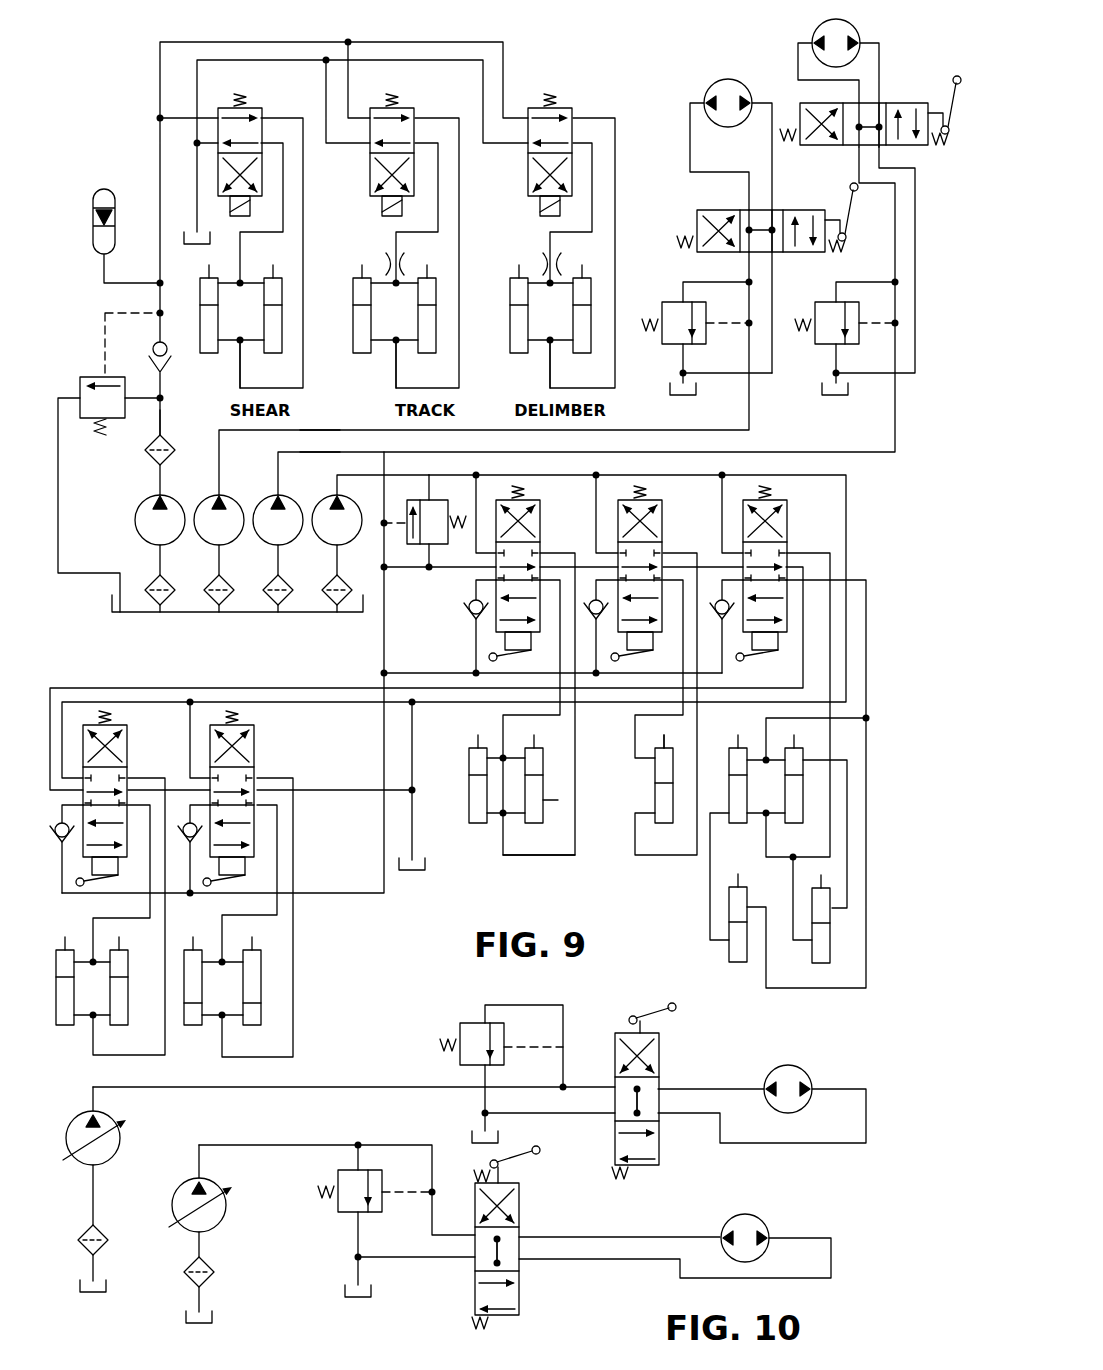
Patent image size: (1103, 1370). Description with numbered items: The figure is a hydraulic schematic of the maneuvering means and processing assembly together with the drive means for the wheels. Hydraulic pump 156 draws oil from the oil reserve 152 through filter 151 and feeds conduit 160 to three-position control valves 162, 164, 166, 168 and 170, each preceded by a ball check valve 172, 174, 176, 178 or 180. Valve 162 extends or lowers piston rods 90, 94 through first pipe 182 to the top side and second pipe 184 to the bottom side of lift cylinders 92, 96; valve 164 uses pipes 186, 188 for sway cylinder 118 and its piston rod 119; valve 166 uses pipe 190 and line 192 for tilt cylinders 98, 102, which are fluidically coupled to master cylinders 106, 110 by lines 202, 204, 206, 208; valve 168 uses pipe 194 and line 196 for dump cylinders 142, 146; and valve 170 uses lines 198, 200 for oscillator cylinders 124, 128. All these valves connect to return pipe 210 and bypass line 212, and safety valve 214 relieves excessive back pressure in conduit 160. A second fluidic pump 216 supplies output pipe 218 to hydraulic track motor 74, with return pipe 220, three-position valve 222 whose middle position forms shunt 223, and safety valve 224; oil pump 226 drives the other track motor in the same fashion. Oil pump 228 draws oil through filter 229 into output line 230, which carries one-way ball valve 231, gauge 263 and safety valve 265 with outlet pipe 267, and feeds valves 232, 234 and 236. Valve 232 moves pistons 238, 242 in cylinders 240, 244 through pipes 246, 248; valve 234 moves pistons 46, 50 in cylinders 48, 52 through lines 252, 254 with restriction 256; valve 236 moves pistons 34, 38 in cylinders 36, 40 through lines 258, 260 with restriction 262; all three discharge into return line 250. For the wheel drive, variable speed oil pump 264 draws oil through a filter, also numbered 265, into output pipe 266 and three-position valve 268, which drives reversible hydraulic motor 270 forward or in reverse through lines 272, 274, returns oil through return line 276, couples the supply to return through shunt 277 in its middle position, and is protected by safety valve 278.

In FIG. 9, the piston 34 is at (510, 277).
In FIG. 9, the fluidic cylinder 36 is at (512, 352).
In FIG. 9, the piston 38 is at (591, 280).
In FIG. 9, the fluidic cylinder 40 is at (585, 355).
In FIG. 9, the piston 46 is at (353, 279).
In FIG. 9, the fluidic cylinder 48 is at (353, 341).
In FIG. 9, the piston 50 is at (437, 283).
In FIG. 9, the fluidic cylinder 52 is at (432, 355).
In FIG. 9, the hydraulic track motor 74 is at (880, 26).
In FIG. 9, the piston rod 90 is at (472, 745).
In FIG. 9, the lift cylinder 92 is at (470, 808).
In FIG. 9, the piston rod 94 is at (538, 746).
In FIG. 9, the lift cylinder 96 is at (560, 797).
In FIG. 9, the tilt cylinder 98 is at (741, 788).
In FIG. 9, the tilt cylinder 102 is at (797, 792).
In FIG. 9, the master cylinder 106 is at (740, 961).
In FIG. 9, the master cylinder 110 is at (823, 948).
In FIG. 9, the sway cylinder 118 is at (655, 800).
In FIG. 9, the piston rod 119 is at (665, 749).
In FIG. 9, the oscillator cylinder 124 is at (190, 958).
In FIG. 9, the oscillator cylinder 128 is at (253, 958).
In FIG. 9, the dump cylinder 142 is at (65, 1027).
In FIG. 9, the dump cylinder 146 is at (128, 1028).
In FIG. 9, the filter 151 is at (328, 582).
In FIG. 9, the oil reserve 152 is at (112, 625).
In FIG. 10, the oil reserve 152 is at (375, 1308).
In FIG. 9, the hydraulic pump 156 is at (352, 545).
In FIG. 9, the conduit 160 is at (418, 656).
In FIG. 9, the three-position control valve 162 is at (540, 516).
In FIG. 9, the three-position valve 164 is at (663, 516).
In FIG. 9, the three-position control valve 166 is at (786, 521).
In FIG. 9, the three-position control valve 168 is at (128, 751).
In FIG. 9, the three-position control valve 170 is at (257, 751).
In FIG. 9, the ball check valve 172 is at (462, 611).
In FIG. 9, the ball check valve 174 is at (587, 622).
In FIG. 9, the ball check valve 176 is at (710, 622).
In FIG. 9, the ball check valve 178 is at (61, 846).
In FIG. 9, the ball check valve 180 is at (196, 845).
In FIG. 9, the first pipe 182 is at (503, 728).
In FIG. 9, the second pipe 184 is at (530, 855).
In FIG. 9, the pipe 186 is at (698, 748).
In FIG. 9, the pipe 188 is at (635, 745).
In FIG. 9, the pipe 190 is at (822, 715).
In FIG. 9, the line 192 is at (767, 845).
In FIG. 9, the pipe 194 is at (93, 940).
In FIG. 9, the line 196 is at (135, 1057).
In FIG. 9, the line 198 is at (240, 916).
In FIG. 9, the line 200 is at (270, 1058).
In FIG. 9, the line 202 is at (785, 988).
In FIG. 9, the line 204 is at (710, 905).
In FIG. 9, the line 206 is at (848, 835).
In FIG. 9, the line 208 is at (793, 899).
In FIG. 9, the return pipe 210 is at (428, 778).
In FIG. 9, the bypass line 212 is at (440, 716).
In FIG. 9, the safety valve 214 is at (440, 498).
In FIG. 9, the second fluidic pump 216 is at (296, 502).
In FIG. 9, the output pipe 218 is at (323, 432).
In FIG. 9, the return pipe 220 is at (728, 357).
In FIG. 9, the three-position valve 222 is at (935, 165).
In FIG. 9, the shunt 223 is at (765, 228).
In FIG. 9, the safety valve 224 is at (820, 305).
In FIG. 9, the oil pump 226 is at (236, 502).
In FIG. 9, the oil pump 228 is at (135, 518).
In FIG. 9, the filter 229 is at (150, 462).
In FIG. 9, the output line 230 is at (163, 425).
In FIG. 9, the one-way ball valve 231 is at (168, 368).
In FIG. 9, the valve 232 is at (262, 108).
In FIG. 9, the valve 234 is at (412, 108).
In FIG. 9, the valve 236 is at (573, 108).
In FIG. 9, the piston 238 is at (200, 274).
In FIG. 9, the cylinder 240 is at (202, 353).
In FIG. 9, the piston 242 is at (283, 272).
In FIG. 9, the cylinder 244 is at (272, 354).
In FIG. 9, the pipe 246 is at (303, 377).
In FIG. 9, the pipe 248 is at (262, 233).
In FIG. 9, the return line 250 is at (195, 86).
In FIG. 9, the line 252 is at (462, 210).
In FIG. 9, the line 254 is at (430, 236).
In FIG. 9, the restriction 256 is at (384, 258).
In FIG. 9, the line 258 is at (617, 233).
In FIG. 9, the line 260 is at (578, 235).
In FIG. 9, the restriction 262 is at (542, 264).
In FIG. 9, the gauge 263 is at (95, 257).
In FIG. 10, the variable speed oil pump 264 is at (188, 1182).
In FIG. 9, the safety valve 265 is at (89, 380).
In FIG. 10, the safety valve 265 is at (232, 1256).
In FIG. 10, the output pipe 266 is at (273, 1162).
In FIG. 9, the outlet pipe 267 is at (58, 553).
In FIG. 10, the three-position valve 268 is at (555, 1208).
In FIG. 10, the reversible hydraulic motor 270 is at (790, 1211).
In FIG. 10, the line 272 is at (640, 1224).
In FIG. 10, the line 274 is at (615, 1282).
In FIG. 10, the return line 276 is at (548, 1113).
In FIG. 10, the shunt 277 is at (548, 1275).
In FIG. 10, the safety valve 278 is at (465, 1026).